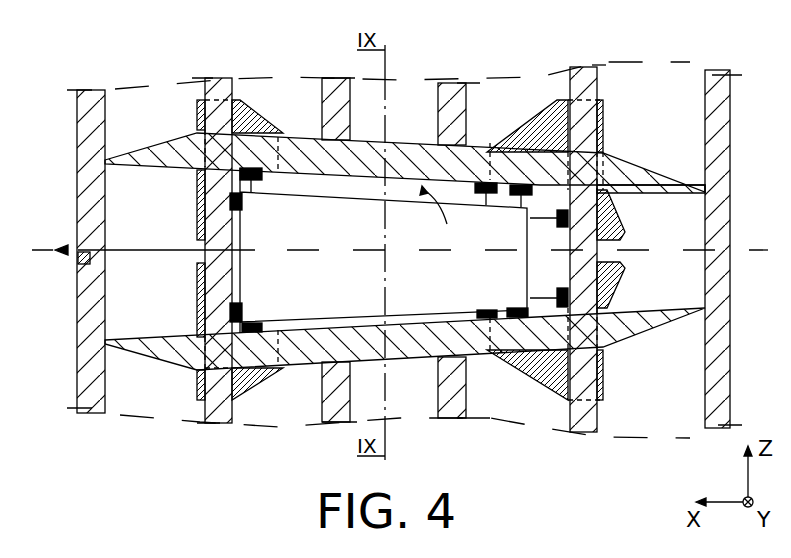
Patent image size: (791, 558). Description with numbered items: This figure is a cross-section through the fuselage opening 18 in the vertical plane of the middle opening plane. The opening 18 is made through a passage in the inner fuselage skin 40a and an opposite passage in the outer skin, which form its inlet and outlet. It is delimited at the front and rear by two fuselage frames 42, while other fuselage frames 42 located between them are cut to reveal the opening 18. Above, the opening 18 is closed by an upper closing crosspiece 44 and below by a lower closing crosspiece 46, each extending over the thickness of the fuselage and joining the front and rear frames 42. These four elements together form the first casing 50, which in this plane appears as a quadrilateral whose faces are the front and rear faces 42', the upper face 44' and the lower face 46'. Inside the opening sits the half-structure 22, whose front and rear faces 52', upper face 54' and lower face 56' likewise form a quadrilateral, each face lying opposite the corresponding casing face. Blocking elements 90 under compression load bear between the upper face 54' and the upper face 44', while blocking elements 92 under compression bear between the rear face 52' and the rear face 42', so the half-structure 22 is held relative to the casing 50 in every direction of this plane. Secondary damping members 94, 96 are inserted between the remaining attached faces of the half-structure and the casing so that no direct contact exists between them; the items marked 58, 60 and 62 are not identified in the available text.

The opening 18 is at (317, 323).
The half-structure 22 is at (416, 280).
The inner fuselage skin 40a is at (120, 203).
The fuselage frame 42 is at (399, 241).
The front and rear faces of the casing 42' is at (399, 257).
The upper closing crosspiece 44 is at (405, 147).
The upper face of the casing 44' is at (409, 210).
The lower closing crosspiece 46 is at (405, 360).
The lower face of the casing 46' is at (427, 292).
The first casing 50 is at (444, 216).
The front and rear faces of the half-structure 52' is at (406, 268).
The upper face of the half-structure 54' is at (348, 221).
The lower face of the half-structure 56' is at (430, 342).
The upper region 58 is at (293, 58).
The right region 60 is at (505, 68).
The flow arrow 62 is at (78, 264).
The blocking element 90 is at (258, 165).
The blocking element 92 is at (605, 212).
The secondary damping member 94 is at (245, 335).
The secondary damping member 96 is at (197, 203).